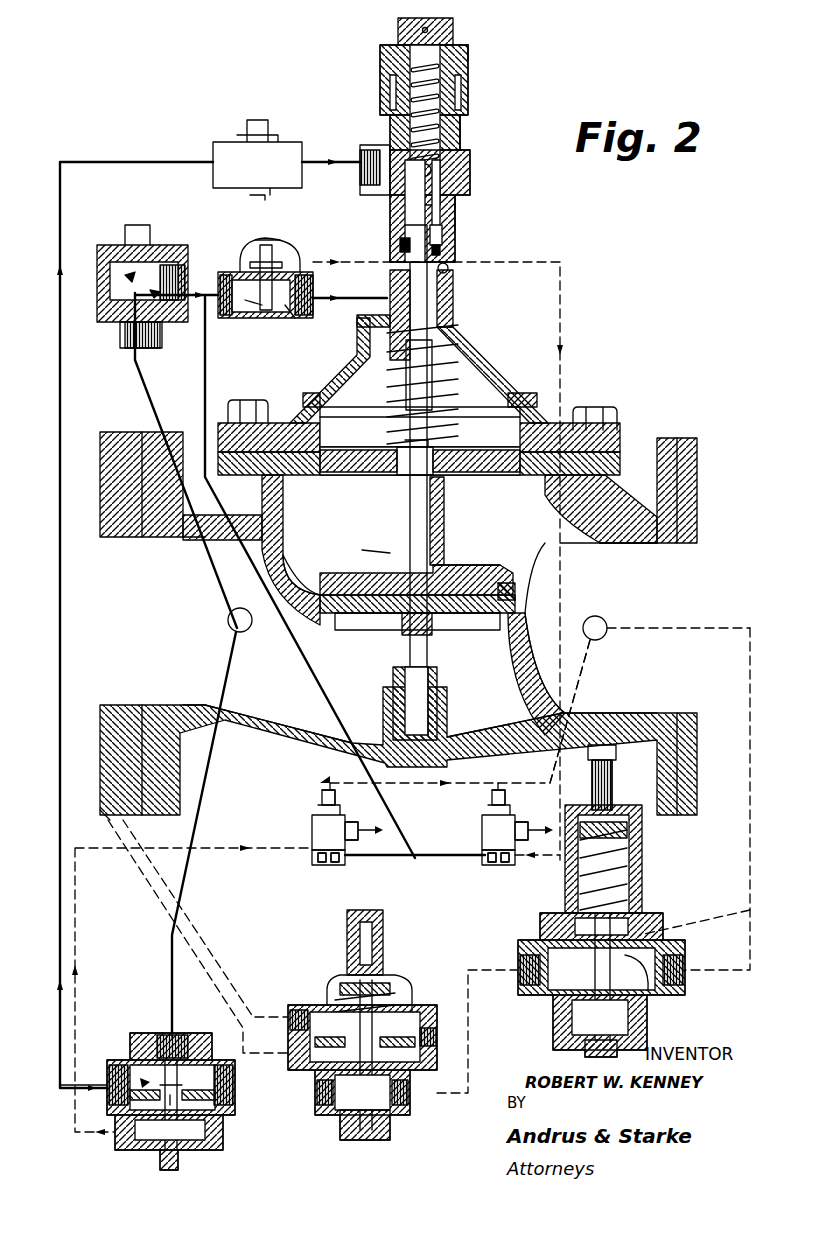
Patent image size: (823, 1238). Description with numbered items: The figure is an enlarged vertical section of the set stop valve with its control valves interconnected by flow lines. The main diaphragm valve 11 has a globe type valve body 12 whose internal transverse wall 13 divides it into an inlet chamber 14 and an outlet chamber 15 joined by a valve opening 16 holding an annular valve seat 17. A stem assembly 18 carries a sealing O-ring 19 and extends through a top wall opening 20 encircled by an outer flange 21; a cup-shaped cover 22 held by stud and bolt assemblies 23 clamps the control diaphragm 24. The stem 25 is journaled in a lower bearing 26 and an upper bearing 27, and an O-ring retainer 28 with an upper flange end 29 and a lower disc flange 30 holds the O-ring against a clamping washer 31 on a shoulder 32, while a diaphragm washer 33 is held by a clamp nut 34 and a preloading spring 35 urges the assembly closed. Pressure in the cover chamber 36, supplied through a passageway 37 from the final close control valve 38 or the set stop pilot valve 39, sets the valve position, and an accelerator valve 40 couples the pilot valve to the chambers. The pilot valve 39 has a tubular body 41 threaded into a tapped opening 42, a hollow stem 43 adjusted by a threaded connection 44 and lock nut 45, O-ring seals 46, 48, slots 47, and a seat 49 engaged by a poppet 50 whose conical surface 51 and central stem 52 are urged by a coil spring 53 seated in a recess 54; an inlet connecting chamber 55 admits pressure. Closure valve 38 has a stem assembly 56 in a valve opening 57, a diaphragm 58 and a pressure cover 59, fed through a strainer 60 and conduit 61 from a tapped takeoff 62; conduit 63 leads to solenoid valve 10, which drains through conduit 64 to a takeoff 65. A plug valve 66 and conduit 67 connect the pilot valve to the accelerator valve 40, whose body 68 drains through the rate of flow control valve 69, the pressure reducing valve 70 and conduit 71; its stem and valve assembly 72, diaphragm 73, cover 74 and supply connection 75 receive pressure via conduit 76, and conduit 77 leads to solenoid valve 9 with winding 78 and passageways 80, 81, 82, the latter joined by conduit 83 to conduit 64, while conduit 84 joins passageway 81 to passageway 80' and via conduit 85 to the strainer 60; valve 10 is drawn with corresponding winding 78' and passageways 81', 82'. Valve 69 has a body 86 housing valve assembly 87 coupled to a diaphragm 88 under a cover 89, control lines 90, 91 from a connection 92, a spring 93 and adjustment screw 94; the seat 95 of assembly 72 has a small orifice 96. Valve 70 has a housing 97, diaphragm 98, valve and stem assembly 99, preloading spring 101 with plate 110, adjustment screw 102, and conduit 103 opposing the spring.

The solenoid valve 9 is at (312, 830).
The solenoid valve 10 is at (482, 830).
The main diaphragm valve 11 is at (290, 740).
The valve body 12 is at (480, 740).
The internal transverse wall 13 is at (290, 575).
The inlet chamber 14 is at (145, 655).
The outlet chamber 15 is at (697, 580).
The valve opening 16 is at (362, 625).
The annular valve seat 17 is at (327, 620).
The valve stem assembly 18 is at (518, 592).
The sealing O-ring 19 is at (510, 582).
The top wall opening 20 is at (500, 495).
The outer flange 21 is at (608, 475).
The cover 22 is at (490, 348).
The stud and bolt assemblies 23 is at (248, 400).
The valve control diaphragm 24 is at (288, 448).
The stem 25 is at (400, 677).
The lower bearing 26 is at (432, 680).
The upper bearing 27 is at (440, 305).
The O-ring retainer 28 is at (367, 548).
The upper flange end 29 is at (462, 500).
The lower disc end flange 30 is at (480, 570).
The O-ring clamping washer 31 is at (470, 620).
The shoulder 32 is at (436, 636).
The diaphragm washer 33 is at (525, 452).
The clamp nut 34 is at (440, 432).
The preloading spring 35 is at (382, 396).
The cover pressure chamber 36 is at (357, 350).
The liquid supply drain passageway 37 is at (382, 322).
The final close control valve 38 is at (298, 322).
The set stop pilot valve 39 is at (470, 128).
The accelerator valve 40 is at (225, 1140).
The tubular valve body 41 is at (458, 204).
The tapped opening 42 is at (450, 268).
The pilot valve stem 43 is at (398, 32).
The threaded connection 44 is at (380, 72).
The lock nut 45 is at (468, 50).
The O-ring seal 46 is at (460, 140).
The slots 47 is at (455, 178).
The O-ring seal 48 is at (445, 230).
The valve seat 49 is at (400, 244).
The valve poppet 50 is at (390, 200).
The conical sealing surface 51 is at (405, 225).
The central stem 52 is at (442, 248).
The coil spring 53 is at (437, 100).
The locating recess 54 is at (432, 168).
The inlet connecting chamber 55 is at (375, 146).
The stem assembly 56 is at (312, 290).
The valve opening 57 is at (262, 312).
The diaphragm 58 is at (230, 276).
The pressure cover 59 is at (300, 240).
The strainer unit 60 is at (105, 342).
The conduit 61 is at (140, 375).
The tapped takeoff 62 is at (246, 632).
The conduit 63 is at (562, 262).
The conduit 64 is at (578, 688).
The tapped takeoff 65 is at (600, 616).
The closing speed adjusting plug valve 66 is at (302, 142).
The conduit 67 is at (58, 570).
The tubular body portion 68 is at (215, 1055).
The rate of flow control valve 69 is at (312, 1078).
The pressure reducing valve 70 is at (652, 1025).
The conduit 71 is at (748, 770).
The stem and valve assembly 72 is at (180, 1105).
The diaphragm 73 is at (115, 1107).
The cover 74 is at (125, 1150).
The lateral supply connection 75 is at (175, 1035).
The conduit 76 is at (173, 988).
The conduit 77 is at (77, 952).
The operating winding 78 is at (358, 819).
The solenoid coil 78' is at (530, 819).
The passageway 80 is at (304, 871).
The passageway 80' is at (474, 869).
The passageway 81 is at (345, 871).
The valve port 81' is at (511, 871).
The lateral passageway 82 is at (316, 794).
The exhaust port 82' is at (483, 795).
The conduit 83 is at (432, 783).
The conduit 84 is at (400, 858).
The interconnecting conduit 85 is at (312, 688).
The valve housing 86 is at (340, 1125).
The regulator valve 87 is at (410, 1082).
The control diaphragm 88 is at (416, 1008).
The cover 89 is at (405, 975).
The control line 90 is at (204, 935).
The control line 91 is at (160, 902).
The body tap 92 is at (100, 812).
The spring 93 is at (335, 995).
The adjustment screw 94 is at (360, 938).
The valve seat 95 is at (185, 1093).
The orifice 96 is at (130, 1070).
The tubular housing 97 is at (660, 1010).
The spring loaded diaphragm 98 is at (542, 922).
The valve and stem assembly 99 is at (590, 970).
The preloading spring 101 is at (635, 862).
The adjustment screw 102 is at (612, 768).
The conduit 103 is at (742, 915).
The spring plate 110 is at (566, 880).